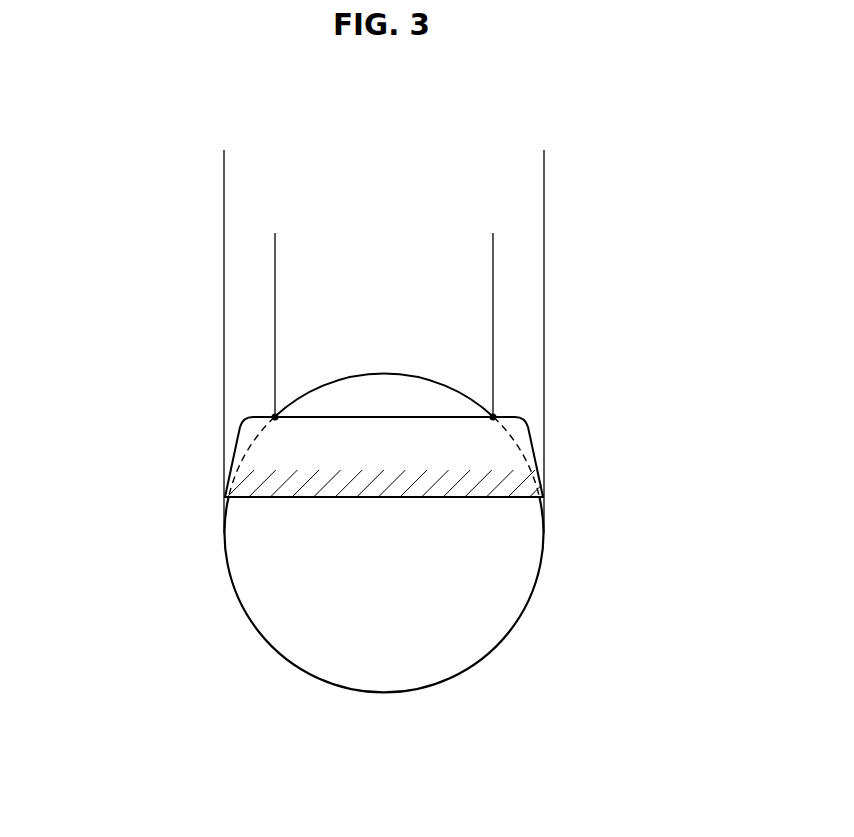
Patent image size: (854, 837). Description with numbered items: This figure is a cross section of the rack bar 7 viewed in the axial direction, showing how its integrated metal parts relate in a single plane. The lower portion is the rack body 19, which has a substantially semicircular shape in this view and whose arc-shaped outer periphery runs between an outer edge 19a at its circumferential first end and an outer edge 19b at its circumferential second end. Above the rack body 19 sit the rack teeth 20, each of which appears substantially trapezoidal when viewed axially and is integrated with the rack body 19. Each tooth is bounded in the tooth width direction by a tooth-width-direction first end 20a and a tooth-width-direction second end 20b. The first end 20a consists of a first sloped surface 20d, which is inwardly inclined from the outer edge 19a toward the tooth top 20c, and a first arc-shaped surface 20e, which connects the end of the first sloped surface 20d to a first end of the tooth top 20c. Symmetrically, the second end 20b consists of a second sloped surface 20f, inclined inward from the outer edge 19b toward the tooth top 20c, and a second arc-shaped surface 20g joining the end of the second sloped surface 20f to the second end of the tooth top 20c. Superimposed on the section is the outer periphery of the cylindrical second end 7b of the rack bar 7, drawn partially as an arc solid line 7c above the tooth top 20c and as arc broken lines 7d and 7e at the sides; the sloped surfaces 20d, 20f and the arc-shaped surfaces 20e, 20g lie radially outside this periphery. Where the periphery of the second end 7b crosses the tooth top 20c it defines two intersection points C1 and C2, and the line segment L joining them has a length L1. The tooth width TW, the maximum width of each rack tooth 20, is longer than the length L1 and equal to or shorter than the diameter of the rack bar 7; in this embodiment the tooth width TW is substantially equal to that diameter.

The rack bar 7 is at (387, 540).
The second end 7b is at (384, 353).
The arc solid line 7c is at (380, 375).
The arc broken line 7d is at (252, 422).
The arc broken line 7e is at (516, 422).
The rack body 19 is at (395, 667).
The outer edge 19a is at (226, 501).
The outer edge 19b is at (542, 501).
The rack teeth 20 is at (385, 477).
The tooth-width-direction first end 20a is at (136, 454).
The tooth-width-direction second end 20b is at (632, 454).
The tooth top 20c is at (380, 417).
The first sloped surface 20d is at (230, 463).
The first arc-shaped surface 20e is at (248, 418).
The second sloped surface 20f is at (538, 463).
The second arc-shaped surface 20g is at (520, 418).
The intersection point C1 is at (273, 413).
The intersection point C2 is at (495, 413).
The tooth width TW is at (544, 188).
The length L1 is at (493, 253).
The line segment L is at (384, 511).